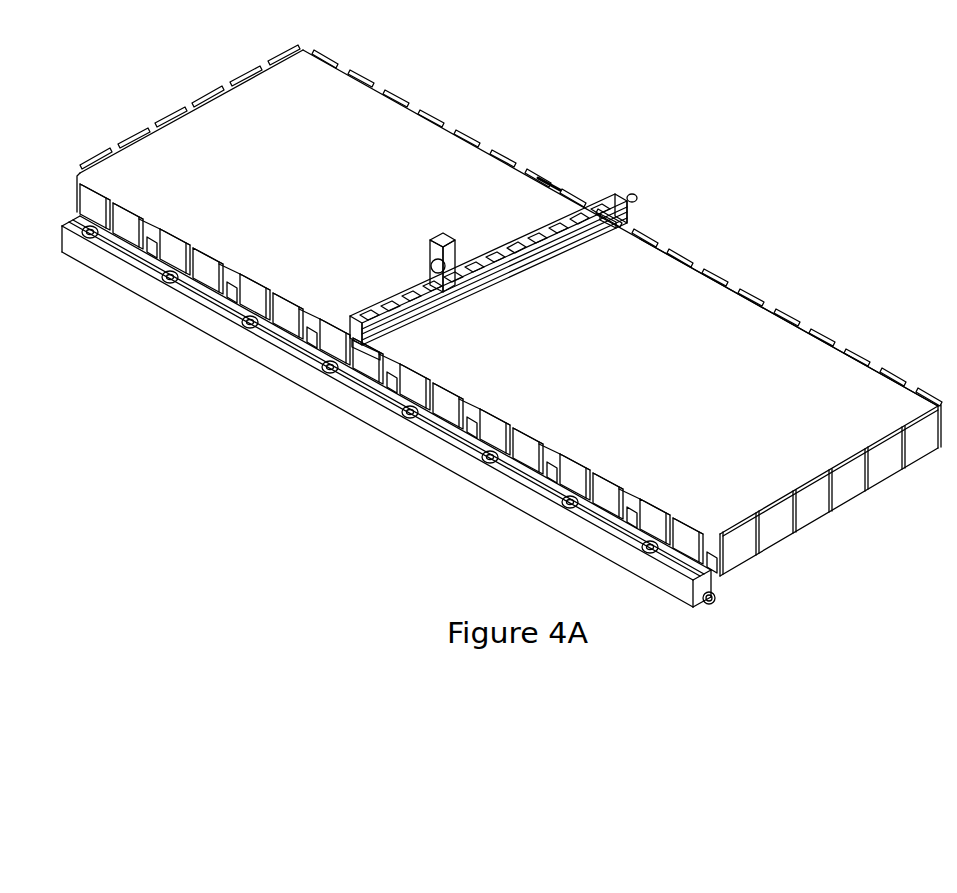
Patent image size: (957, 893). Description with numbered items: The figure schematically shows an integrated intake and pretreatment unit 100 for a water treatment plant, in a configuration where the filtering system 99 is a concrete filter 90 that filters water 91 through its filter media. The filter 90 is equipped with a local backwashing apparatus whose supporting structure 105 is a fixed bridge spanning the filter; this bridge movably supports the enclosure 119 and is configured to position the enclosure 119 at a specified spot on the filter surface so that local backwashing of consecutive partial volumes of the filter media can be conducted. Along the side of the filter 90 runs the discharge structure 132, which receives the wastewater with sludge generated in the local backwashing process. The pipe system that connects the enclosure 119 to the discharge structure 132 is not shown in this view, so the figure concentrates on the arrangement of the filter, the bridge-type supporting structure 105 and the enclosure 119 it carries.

The integrated intake and pretreatment unit 100 is at (114, 61).
The filtering system 99 is at (703, 218).
The water 91 is at (773, 347).
The filter 90 is at (918, 445).
The discharge structure 132 is at (207, 297).
The supporting structure 105 is at (573, 178).
The enclosure 119 is at (418, 270).